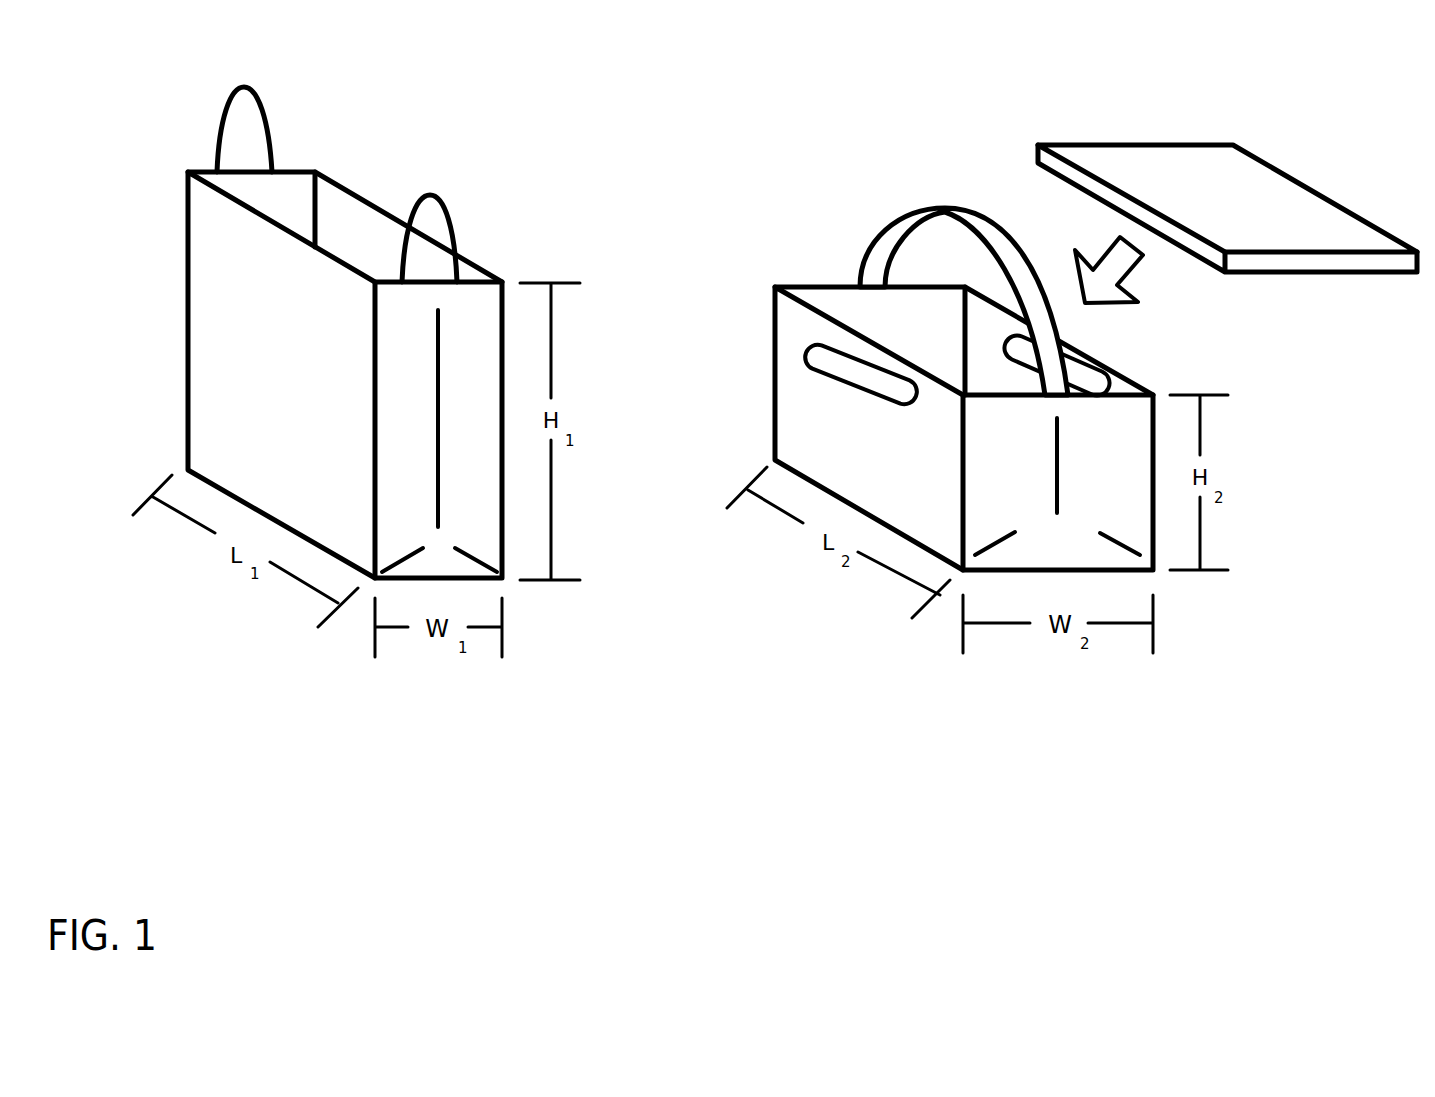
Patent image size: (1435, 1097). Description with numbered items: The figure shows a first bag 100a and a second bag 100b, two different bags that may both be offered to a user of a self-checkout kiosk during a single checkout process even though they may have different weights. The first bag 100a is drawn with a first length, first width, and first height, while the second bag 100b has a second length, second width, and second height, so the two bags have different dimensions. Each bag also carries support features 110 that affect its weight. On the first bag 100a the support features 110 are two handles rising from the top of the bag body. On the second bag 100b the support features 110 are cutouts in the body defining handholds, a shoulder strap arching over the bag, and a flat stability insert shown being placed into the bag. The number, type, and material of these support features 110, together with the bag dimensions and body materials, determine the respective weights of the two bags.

The first bag 100a is at (188, 212).
The second bag 100b is at (773, 347).
The support features 110 is at (262, 96).